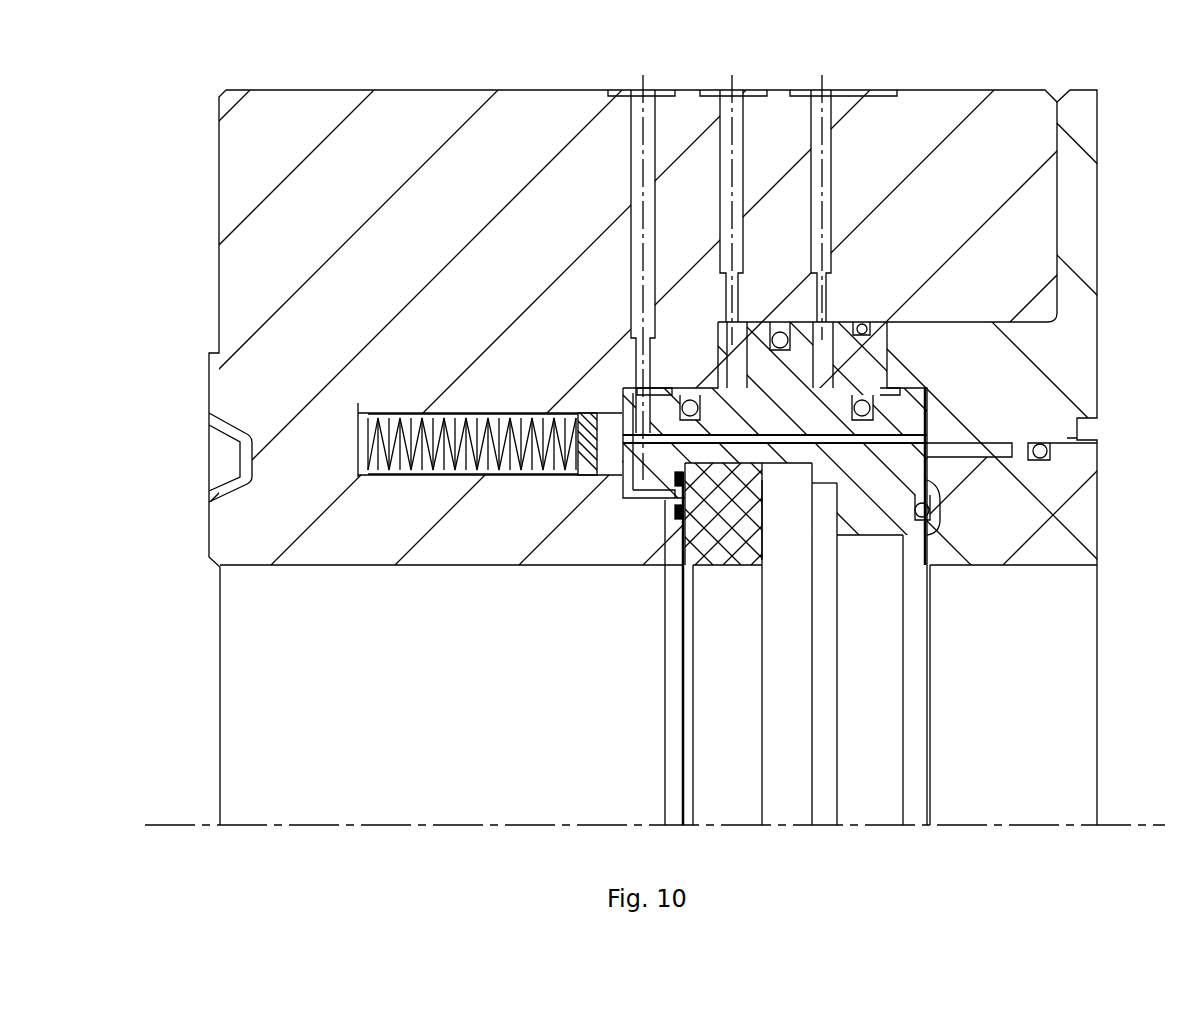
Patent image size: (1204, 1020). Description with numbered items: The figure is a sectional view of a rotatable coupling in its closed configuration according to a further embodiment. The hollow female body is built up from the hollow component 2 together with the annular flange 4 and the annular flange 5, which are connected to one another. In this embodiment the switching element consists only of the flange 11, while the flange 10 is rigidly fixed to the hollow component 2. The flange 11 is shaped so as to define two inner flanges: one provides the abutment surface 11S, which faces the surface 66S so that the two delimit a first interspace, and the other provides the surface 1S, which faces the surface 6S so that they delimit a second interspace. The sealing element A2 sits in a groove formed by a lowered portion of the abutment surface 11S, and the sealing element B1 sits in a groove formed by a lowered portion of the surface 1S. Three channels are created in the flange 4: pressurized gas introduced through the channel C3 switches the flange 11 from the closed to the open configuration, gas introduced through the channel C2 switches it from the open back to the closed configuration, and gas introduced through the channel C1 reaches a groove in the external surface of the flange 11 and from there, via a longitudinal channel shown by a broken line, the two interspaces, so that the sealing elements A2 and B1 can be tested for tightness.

The hollow component 2 is at (330, 170).
The flange 4 is at (1020, 132).
The flange 5 is at (960, 362).
The channel C1 is at (640, 178).
The channel C2 is at (725, 165).
The channel C3 is at (830, 125).
The flange 11 is at (748, 417).
The abutment surface 11S is at (728, 520).
The flange 10 is at (762, 565).
The surface 6S is at (920, 500).
The sealing element A2 is at (663, 487).
The surface 66S is at (673, 500).
The surface 1S is at (928, 462).
The sealing element B1 is at (940, 524).